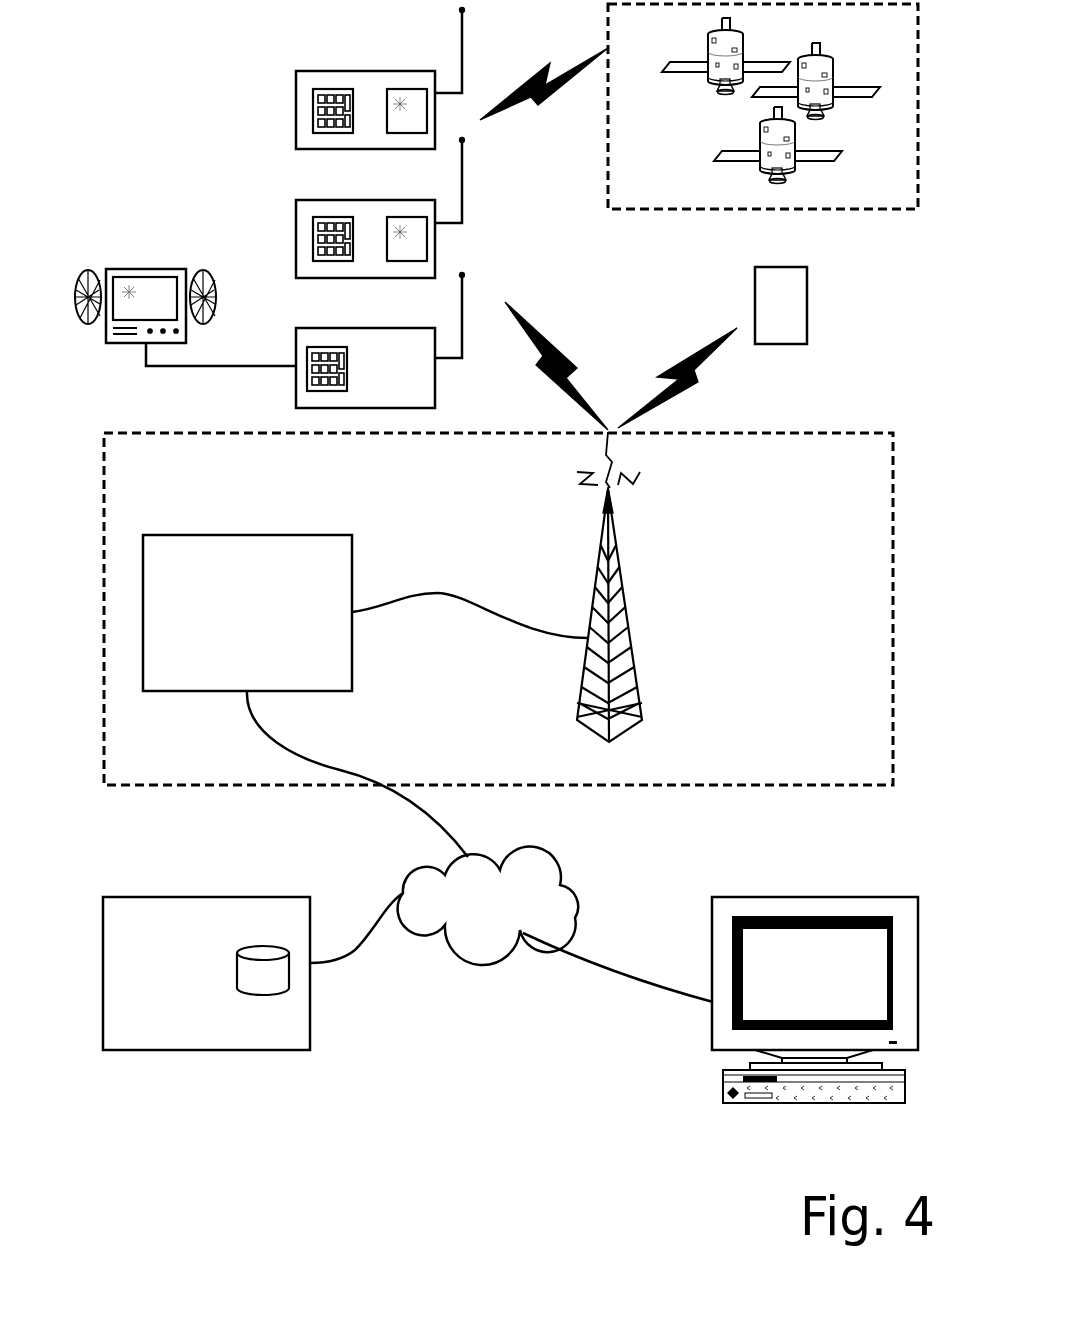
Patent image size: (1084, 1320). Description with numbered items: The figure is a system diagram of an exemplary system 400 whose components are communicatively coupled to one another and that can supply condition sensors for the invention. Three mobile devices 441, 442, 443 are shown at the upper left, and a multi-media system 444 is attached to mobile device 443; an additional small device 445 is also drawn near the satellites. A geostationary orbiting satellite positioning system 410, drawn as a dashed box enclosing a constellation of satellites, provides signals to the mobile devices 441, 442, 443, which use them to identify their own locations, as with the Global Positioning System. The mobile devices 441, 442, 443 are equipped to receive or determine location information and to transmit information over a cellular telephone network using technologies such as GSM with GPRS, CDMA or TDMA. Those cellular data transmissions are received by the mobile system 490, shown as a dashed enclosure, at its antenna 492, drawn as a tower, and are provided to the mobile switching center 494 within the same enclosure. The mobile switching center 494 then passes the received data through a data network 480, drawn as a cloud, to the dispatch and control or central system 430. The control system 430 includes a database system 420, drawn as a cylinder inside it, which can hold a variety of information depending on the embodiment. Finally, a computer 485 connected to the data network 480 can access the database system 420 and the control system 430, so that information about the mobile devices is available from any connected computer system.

The system 400 is at (165, 48).
The geostationary orbiting satellite positioning system 410 is at (608, 196).
The database system 420 is at (268, 993).
The control system 430 is at (220, 966).
The mobile device 441 is at (296, 131).
The mobile device 442 is at (296, 262).
The mobile device 443 is at (296, 398).
The multi-media system 444 is at (180, 269).
The mobile device 445 is at (780, 267).
The data network 480 is at (470, 935).
The computer 485 is at (815, 897).
The mobile system 490 is at (872, 432).
The antenna 492 is at (590, 585).
The mobile switching center 494 is at (277, 535).